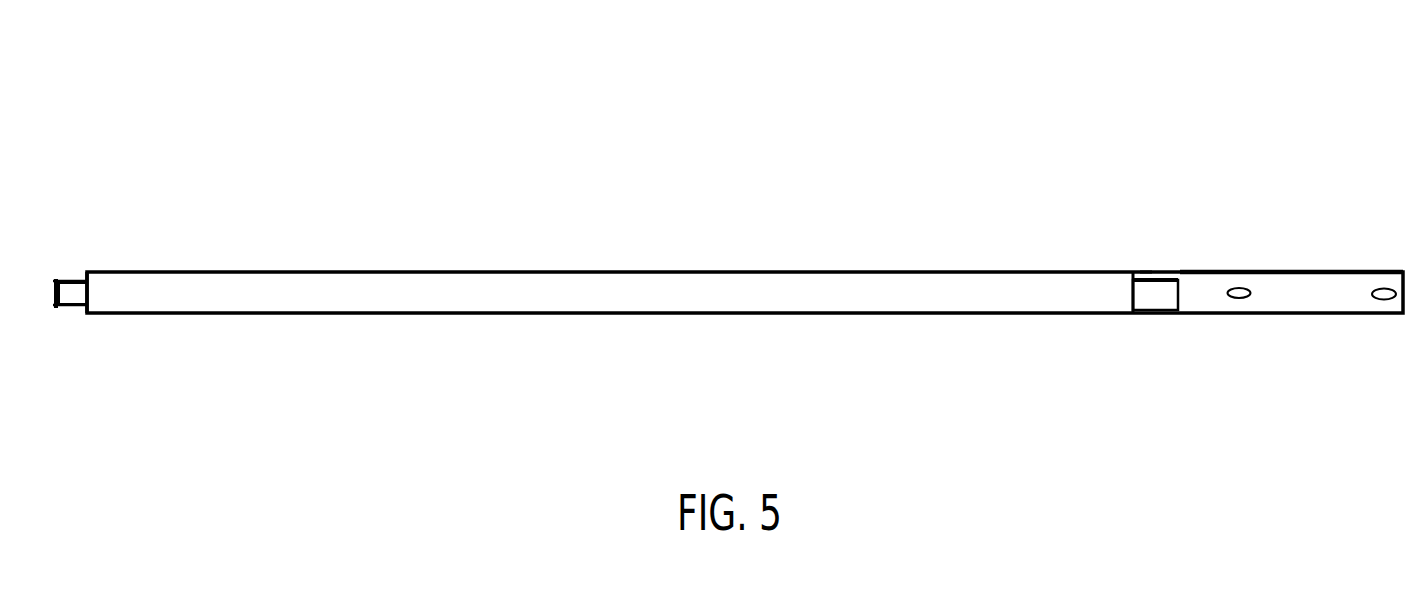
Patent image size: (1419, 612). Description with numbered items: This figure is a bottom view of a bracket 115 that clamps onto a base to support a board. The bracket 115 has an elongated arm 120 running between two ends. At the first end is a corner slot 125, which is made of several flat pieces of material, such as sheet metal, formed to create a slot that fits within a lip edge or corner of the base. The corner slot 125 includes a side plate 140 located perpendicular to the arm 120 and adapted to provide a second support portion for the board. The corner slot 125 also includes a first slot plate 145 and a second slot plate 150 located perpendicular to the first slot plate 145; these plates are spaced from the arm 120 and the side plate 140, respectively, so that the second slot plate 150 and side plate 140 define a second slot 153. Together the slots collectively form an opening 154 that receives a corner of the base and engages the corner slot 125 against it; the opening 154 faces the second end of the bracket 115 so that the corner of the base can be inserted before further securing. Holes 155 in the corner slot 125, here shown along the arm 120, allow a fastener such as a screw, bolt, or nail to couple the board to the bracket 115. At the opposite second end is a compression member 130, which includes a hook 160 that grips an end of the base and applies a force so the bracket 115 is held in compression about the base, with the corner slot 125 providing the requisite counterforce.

The bracket 115 is at (1112, 118).
The arm 120 is at (610, 273).
The corner slot 125 is at (1233, 262).
The compression member 130 is at (95, 247).
The side plate 140 is at (1328, 272).
The first slot plate 145 is at (1147, 295).
The second slot plate 150 is at (1152, 276).
The second slot 153 is at (1140, 275).
The opening 154 is at (1146, 272).
The holes 155 is at (1238, 298).
The hook 160 is at (62, 307).